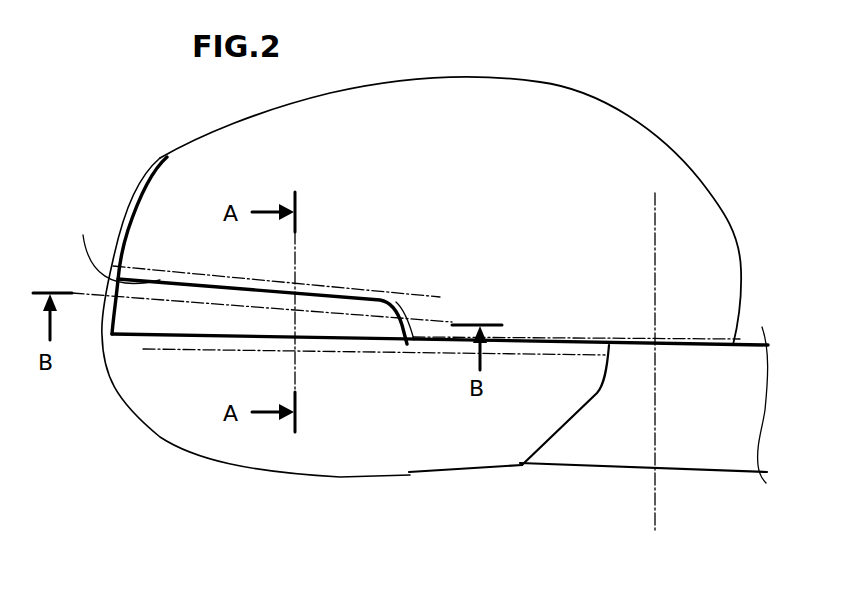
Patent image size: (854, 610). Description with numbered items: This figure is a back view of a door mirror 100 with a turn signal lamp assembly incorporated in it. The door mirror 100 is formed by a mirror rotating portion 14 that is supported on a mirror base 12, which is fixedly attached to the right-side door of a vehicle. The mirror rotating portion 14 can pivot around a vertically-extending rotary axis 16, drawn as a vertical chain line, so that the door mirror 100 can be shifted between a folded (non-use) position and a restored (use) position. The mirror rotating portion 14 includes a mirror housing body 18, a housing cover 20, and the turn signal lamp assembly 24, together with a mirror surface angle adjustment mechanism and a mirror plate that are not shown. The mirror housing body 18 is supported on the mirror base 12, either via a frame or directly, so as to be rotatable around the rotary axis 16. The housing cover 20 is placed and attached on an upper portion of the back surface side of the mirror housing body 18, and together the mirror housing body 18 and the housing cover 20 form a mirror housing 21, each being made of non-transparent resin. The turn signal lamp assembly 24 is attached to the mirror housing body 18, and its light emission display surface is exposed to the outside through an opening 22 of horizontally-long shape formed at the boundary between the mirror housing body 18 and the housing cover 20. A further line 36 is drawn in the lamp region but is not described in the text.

The door mirror 100 is at (688, 100).
The mirror rotating portion 14 is at (720, 185).
The opening 22 is at (83, 235).
The turn signal lamp assembly 24 is at (173, 310).
The lens 36 is at (204, 316).
The mirror housing body 18 is at (407, 413).
The housing cover 20 is at (528, 288).
The mirror housing 21 is at (493, 522).
The rotary axis 16 is at (653, 507).
The mirror base 12 is at (715, 448).